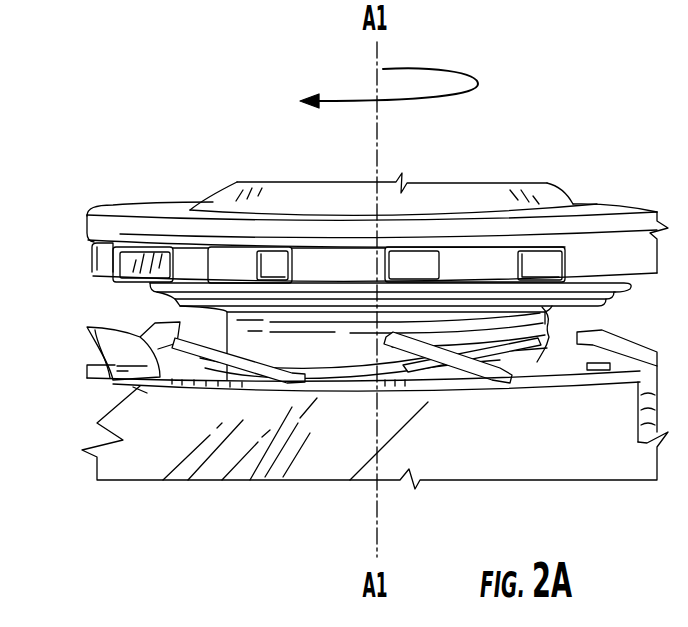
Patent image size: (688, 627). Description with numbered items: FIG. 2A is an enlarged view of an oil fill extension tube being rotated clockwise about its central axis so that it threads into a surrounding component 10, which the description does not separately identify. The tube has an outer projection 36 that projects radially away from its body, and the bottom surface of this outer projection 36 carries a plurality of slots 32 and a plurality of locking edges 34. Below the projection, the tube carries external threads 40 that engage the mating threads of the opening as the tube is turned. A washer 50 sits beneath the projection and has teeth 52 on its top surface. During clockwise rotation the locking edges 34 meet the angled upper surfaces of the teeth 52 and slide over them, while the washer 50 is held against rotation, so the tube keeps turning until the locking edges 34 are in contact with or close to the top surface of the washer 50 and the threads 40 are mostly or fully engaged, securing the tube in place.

The base / mounting body 10 is at (535, 472).
The slots 32 is at (316, 266).
The locking edges 34 is at (267, 268).
The outer projection 36 is at (620, 208).
The external threads 40 is at (567, 323).
The washer 50 is at (158, 404).
The teeth 52 is at (103, 343).